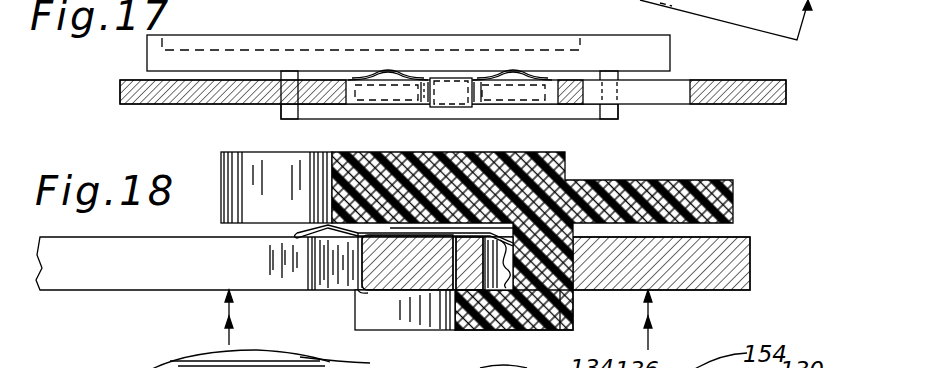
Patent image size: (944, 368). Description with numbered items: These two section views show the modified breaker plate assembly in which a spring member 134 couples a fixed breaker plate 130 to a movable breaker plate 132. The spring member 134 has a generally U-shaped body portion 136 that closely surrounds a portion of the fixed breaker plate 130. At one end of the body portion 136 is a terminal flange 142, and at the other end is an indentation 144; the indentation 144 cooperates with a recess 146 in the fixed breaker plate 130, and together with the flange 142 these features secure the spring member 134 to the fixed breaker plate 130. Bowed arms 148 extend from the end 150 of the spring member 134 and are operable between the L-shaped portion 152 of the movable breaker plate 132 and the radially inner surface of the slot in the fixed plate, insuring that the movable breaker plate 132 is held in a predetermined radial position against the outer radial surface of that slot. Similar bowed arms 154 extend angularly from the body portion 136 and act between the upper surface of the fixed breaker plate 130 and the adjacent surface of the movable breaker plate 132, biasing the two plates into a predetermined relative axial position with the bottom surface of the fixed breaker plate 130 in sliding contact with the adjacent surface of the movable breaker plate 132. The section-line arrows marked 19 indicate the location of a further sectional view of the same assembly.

In FIG. 17, the fixed breaker plate 130 is at (730, 56).
In FIG. 18, the fixed breaker plate 130 is at (717, 290).
In FIG. 17, the movable breaker plate 132 is at (620, 18).
In FIG. 18, the movable breaker plate 132 is at (477, 226).
In FIG. 17, the spring member 134 is at (423, 91).
In FIG. 18, the spring member 134 is at (358, 264).
In FIG. 17, the U-shaped body portion 136 is at (457, 78).
In FIG. 18, the U-shaped body portion 136 is at (440, 230).
In FIG. 18, the terminal flange 142 is at (372, 292).
In FIG. 18, the indentation 144 is at (468, 329).
In FIG. 18, the recess 146 is at (447, 331).
In FIG. 17, the bowed arms 148 is at (517, 98).
In FIG. 18, the end 150 is at (520, 250).
In FIG. 18, the L-shaped portion 152 is at (557, 328).
In FIG. 17, the bowed arms 154 is at (383, 72).
In FIG. 18, the section line 19 is at (438, 320).